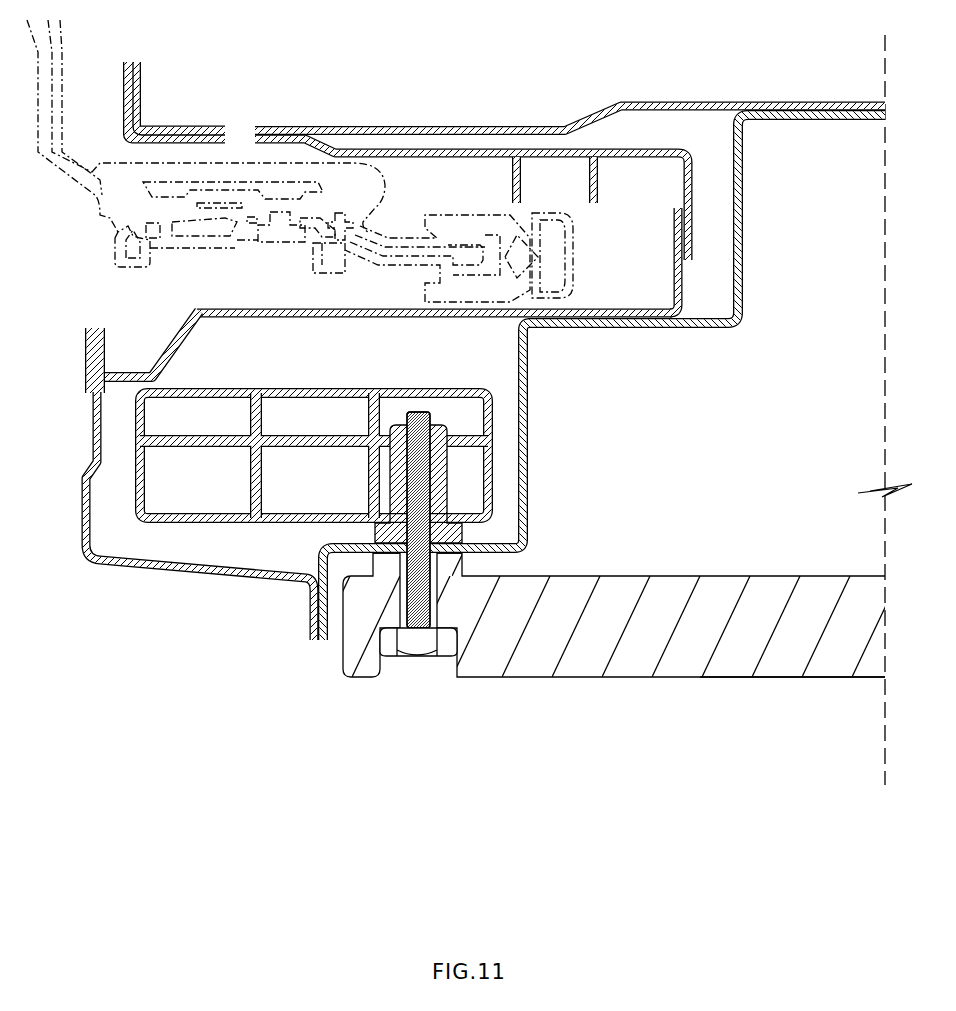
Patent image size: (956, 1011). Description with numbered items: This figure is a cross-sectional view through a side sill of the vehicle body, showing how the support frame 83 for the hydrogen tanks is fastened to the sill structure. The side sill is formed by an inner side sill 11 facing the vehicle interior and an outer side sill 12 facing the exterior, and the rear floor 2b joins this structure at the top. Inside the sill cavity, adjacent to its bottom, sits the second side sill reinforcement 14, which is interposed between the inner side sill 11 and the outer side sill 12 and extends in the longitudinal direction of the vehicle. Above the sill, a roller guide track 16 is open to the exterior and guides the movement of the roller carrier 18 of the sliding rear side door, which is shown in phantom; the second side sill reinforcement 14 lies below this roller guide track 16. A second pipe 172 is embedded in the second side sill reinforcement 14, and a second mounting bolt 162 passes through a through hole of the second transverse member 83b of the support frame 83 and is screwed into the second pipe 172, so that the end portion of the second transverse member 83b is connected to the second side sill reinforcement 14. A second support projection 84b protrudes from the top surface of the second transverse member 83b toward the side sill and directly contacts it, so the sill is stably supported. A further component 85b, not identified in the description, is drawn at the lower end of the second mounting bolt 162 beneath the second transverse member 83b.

The rear floor 2b is at (503, 128).
The inner side sill 11 is at (744, 194).
The outer side sill 12 is at (85, 480).
The second side sill reinforcement 14 is at (140, 497).
The roller guide track 16 is at (684, 277).
The roller carrier 18 is at (110, 214).
The second mounting bolt 162 is at (428, 497).
The second pipe 172 is at (443, 467).
The support frame 83 is at (745, 686).
The second transverse member 83b is at (558, 678).
The second support projection 84b is at (383, 563).
The nut 85b is at (452, 637).